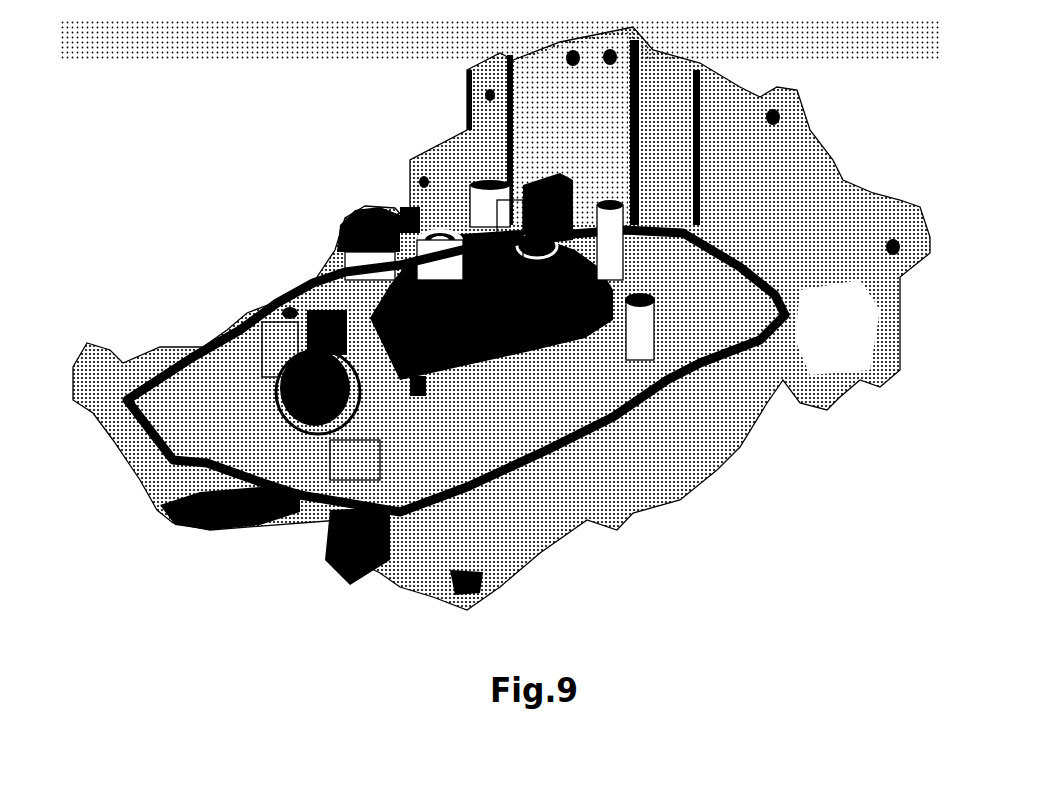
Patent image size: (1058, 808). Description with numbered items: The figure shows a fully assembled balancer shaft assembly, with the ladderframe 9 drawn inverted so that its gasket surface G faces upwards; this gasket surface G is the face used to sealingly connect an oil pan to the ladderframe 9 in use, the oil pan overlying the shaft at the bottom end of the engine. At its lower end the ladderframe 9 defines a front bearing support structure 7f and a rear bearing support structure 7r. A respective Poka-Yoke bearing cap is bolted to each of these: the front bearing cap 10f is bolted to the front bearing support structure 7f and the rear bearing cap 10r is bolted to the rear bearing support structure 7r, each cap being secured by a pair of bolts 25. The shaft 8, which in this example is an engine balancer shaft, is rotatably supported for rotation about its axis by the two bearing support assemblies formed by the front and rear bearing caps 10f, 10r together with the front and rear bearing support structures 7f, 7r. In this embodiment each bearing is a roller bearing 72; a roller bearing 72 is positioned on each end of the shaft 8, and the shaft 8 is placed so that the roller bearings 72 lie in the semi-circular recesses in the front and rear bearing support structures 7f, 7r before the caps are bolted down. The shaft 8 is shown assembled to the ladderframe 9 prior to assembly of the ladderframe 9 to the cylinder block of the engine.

The ladderframe 9 is at (447, 142).
The bolts 25 is at (500, 175).
The rear bearing cap 10r is at (510, 217).
The front bearing cap 10f is at (283, 337).
The gasket surface G is at (312, 275).
The roller bearing 72 is at (252, 593).
The rear bearing support structure 7r is at (686, 410).
The front bearing support structure 7f is at (352, 462).
The shaft 8 is at (222, 508).